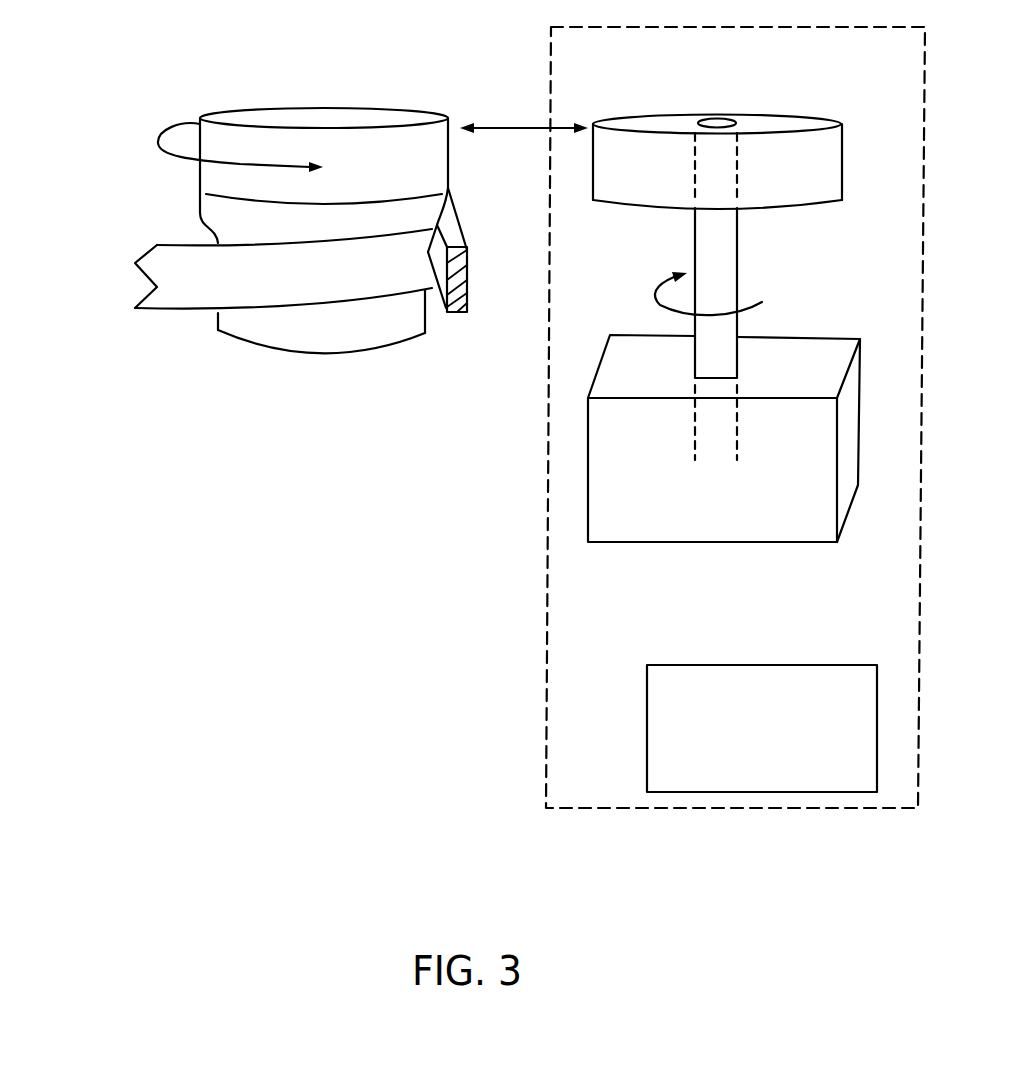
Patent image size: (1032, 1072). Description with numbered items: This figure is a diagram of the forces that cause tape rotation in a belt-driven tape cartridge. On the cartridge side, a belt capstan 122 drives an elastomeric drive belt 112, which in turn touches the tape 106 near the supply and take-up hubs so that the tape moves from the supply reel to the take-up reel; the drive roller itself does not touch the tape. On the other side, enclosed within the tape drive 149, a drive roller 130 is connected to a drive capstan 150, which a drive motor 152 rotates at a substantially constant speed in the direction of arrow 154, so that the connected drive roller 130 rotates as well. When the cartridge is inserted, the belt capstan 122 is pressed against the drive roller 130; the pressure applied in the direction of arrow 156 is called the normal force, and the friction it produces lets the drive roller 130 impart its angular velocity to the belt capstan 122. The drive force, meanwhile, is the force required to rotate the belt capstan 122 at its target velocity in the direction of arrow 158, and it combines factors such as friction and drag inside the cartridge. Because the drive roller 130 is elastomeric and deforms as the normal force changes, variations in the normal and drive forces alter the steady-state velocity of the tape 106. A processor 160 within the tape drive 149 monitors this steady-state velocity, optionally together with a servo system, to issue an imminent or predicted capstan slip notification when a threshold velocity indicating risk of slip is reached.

The belt capstan 122 is at (328, 113).
The arrow indicating drive force direction 158 is at (173, 158).
The drive belt 112 is at (197, 300).
The tape 106 is at (470, 251).
The arrow indicating normal force direction 156 is at (490, 130).
The tape drive 149 is at (545, 705).
The drive roller 130 is at (833, 155).
The drive capstan 150 is at (737, 273).
The arrow indicating drive capstan rotation direction 154 is at (654, 298).
The drive motor 152 is at (720, 535).
The processor 160 is at (772, 665).